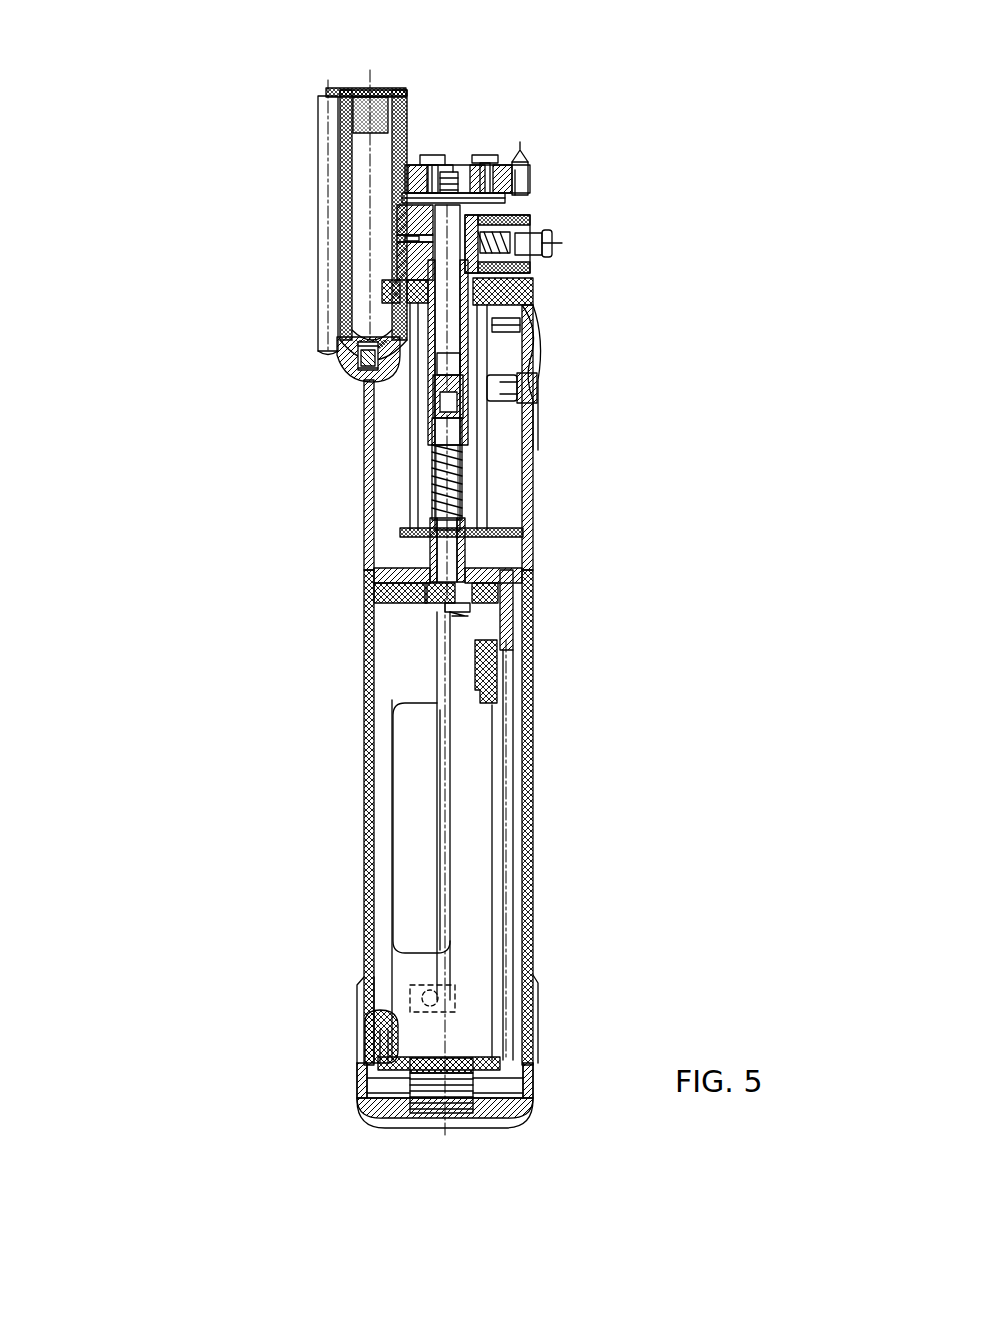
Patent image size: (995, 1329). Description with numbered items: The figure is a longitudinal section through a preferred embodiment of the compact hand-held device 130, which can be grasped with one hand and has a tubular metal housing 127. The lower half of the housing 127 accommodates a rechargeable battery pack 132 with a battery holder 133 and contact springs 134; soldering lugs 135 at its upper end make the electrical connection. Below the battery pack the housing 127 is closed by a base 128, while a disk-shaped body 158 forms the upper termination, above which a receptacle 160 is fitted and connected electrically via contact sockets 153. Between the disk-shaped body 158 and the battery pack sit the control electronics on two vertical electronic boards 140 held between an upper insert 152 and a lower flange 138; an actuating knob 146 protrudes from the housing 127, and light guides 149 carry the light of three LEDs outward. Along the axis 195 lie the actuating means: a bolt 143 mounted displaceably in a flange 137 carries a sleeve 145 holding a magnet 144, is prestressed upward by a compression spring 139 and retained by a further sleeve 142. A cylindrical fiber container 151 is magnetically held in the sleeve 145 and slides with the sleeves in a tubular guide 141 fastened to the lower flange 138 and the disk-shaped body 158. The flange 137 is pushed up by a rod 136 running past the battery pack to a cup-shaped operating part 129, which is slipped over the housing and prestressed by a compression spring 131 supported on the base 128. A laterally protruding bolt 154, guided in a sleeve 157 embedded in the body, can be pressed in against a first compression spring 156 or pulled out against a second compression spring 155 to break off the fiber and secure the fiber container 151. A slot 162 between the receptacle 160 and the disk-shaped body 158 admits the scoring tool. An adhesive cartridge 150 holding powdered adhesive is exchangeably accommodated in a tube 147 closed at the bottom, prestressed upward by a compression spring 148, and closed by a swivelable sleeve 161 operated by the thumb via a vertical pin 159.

The tubular metal housing 127 is at (368, 944).
The base 128 is at (412, 1078).
The cup-shaped operating part 129 is at (360, 1034).
The hand-held device 130 is at (622, 724).
The compression spring 131 is at (366, 1122).
The rechargeable battery pack 132 is at (428, 864).
The battery holder 133 is at (476, 690).
The contact springs 134 is at (438, 706).
The soldering lugs 135 is at (437, 625).
The rod 136 is at (507, 627).
The flange 137 is at (440, 604).
The lower flange 138 is at (503, 533).
The compression spring 139 is at (400, 588).
The electronic boards 140 is at (483, 487).
The tubular guide 141 is at (492, 475).
The further sleeve 142 is at (432, 500).
The bolt 143 is at (432, 445).
The magnet 144 is at (440, 420).
The sleeve 145 is at (440, 396).
The actuating knob 146 is at (538, 380).
The tube 147 is at (358, 357).
The compression spring 148 is at (340, 352).
The light guides 149 is at (536, 322).
The adhesive cartridge 150 is at (348, 316).
The fiber container 151 is at (530, 270).
The upper insert 152 is at (385, 290).
The contact sockets 153 is at (385, 247).
The bolt 154 is at (533, 233).
The second compression spring 155 is at (512, 232).
The first compression spring 156 is at (526, 215).
The sleeve 157 is at (515, 150).
The disk-shaped body 158 is at (442, 170).
The pin 159 is at (322, 156).
The receptacle 160 is at (418, 155).
The sleeve 161 is at (330, 92).
The slot 162 is at (392, 197).
The axis 195 is at (440, 1130).